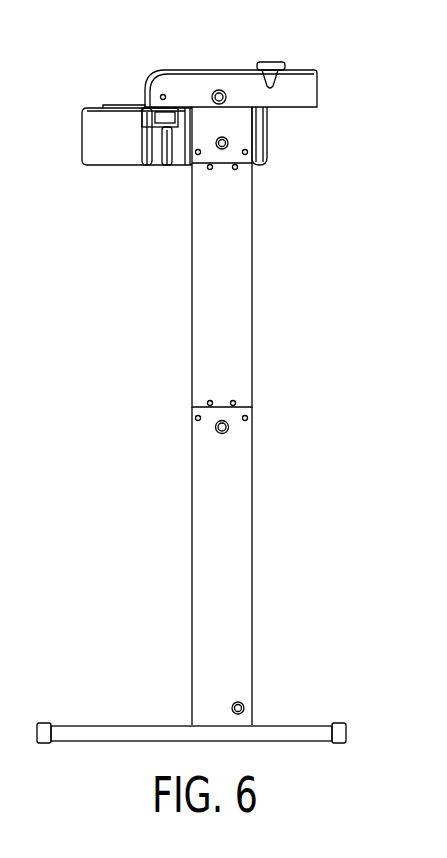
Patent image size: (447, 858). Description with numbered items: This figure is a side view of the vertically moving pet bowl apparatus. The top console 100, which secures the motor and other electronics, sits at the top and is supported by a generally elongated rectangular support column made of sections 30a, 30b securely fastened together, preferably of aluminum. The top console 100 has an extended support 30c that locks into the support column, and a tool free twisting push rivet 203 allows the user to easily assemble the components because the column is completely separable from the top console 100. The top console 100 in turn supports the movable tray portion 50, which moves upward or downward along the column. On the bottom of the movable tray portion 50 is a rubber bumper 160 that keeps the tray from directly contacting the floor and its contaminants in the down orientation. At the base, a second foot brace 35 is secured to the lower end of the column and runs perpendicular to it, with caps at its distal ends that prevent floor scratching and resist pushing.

The top console 100 is at (198, 72).
The bumper 160 is at (108, 164).
The movable tray portion 50 is at (120, 152).
The tool free twisting push rivet 203 is at (228, 140).
The extended support 30c is at (240, 143).
The second support column section 30b is at (242, 317).
The second support column section 30a is at (243, 610).
The second foot brace 35 is at (122, 732).